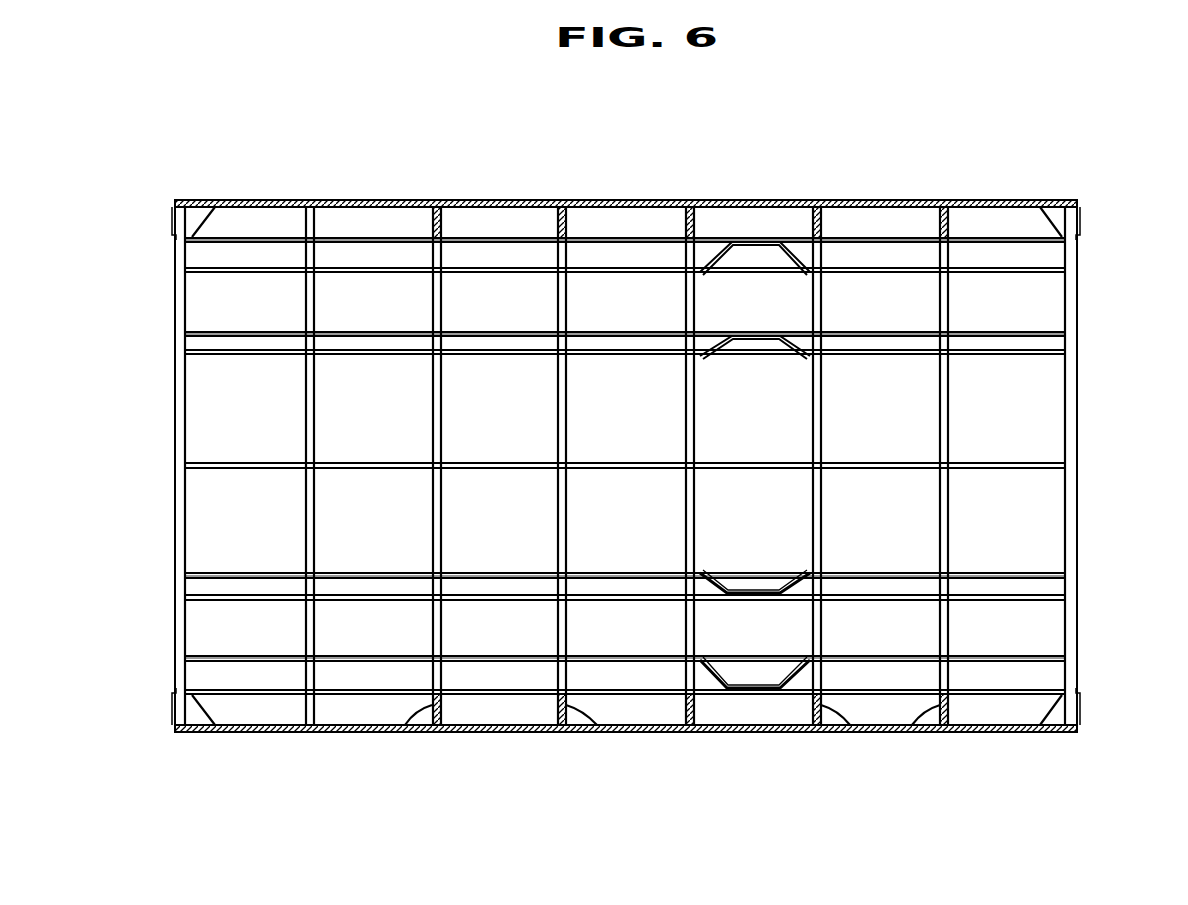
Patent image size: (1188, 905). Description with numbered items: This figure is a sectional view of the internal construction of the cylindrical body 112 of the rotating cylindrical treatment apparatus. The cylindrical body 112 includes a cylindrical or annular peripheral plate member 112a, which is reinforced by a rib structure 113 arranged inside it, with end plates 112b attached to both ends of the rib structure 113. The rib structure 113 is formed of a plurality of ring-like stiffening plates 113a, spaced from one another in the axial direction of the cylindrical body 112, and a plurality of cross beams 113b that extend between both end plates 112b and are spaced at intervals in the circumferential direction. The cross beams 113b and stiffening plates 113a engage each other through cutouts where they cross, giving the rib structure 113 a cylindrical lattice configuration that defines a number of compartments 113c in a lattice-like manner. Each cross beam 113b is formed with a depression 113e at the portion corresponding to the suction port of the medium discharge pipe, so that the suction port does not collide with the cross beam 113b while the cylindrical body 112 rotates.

The cylindrical body 112 is at (641, 170).
The peripheral plate member 112a is at (752, 200).
The end plates 112b is at (180, 517).
The rib structure 113 is at (556, 634).
The ring-like stiffening plates 113a is at (402, 723).
The cross beams 113b is at (892, 343).
The compartment 113c is at (360, 282).
The depression 113e is at (753, 246).